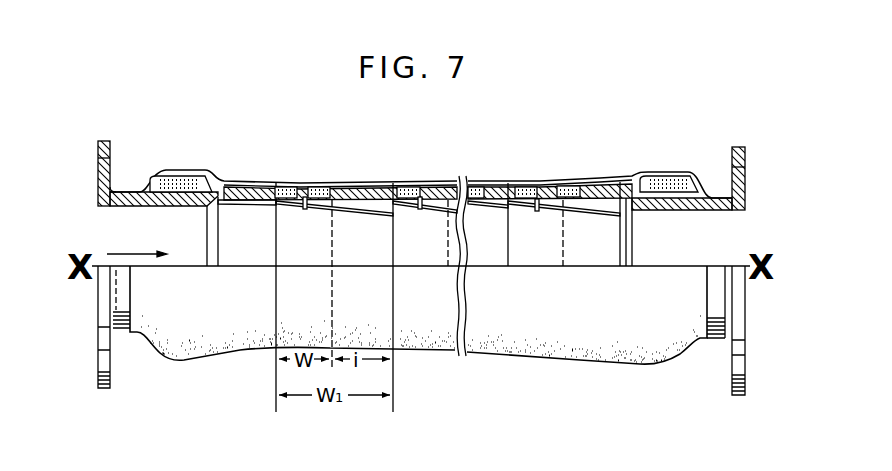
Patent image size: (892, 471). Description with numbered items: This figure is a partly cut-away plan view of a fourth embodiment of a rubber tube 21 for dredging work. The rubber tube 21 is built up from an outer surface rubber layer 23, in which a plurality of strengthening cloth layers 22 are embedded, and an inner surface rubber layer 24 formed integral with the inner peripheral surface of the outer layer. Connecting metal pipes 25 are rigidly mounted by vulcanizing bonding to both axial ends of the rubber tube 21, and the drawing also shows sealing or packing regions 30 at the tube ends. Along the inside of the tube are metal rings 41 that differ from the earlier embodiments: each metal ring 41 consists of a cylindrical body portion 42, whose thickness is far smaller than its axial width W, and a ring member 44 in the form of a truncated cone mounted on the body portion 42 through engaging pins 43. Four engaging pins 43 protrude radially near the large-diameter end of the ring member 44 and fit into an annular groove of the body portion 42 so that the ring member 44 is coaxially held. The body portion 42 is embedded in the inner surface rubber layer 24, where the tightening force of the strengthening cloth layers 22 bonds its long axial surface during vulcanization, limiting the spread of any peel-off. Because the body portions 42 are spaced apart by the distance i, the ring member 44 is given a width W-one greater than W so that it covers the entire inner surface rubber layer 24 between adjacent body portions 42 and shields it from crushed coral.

The rubber tube 21 is at (224, 172).
The strengthening cloth layers 22 is at (338, 183).
The outer surface rubber layer 23 is at (320, 186).
The inner surface rubber layer 24 is at (372, 195).
The connecting metal pipes 25 is at (111, 152).
The seal packing 30 is at (180, 176).
The metal ring 41 is at (583, 182).
The cylindrical body portion 42 is at (536, 186).
The engaging pin 43 is at (539, 211).
The ring member 44 is at (594, 212).